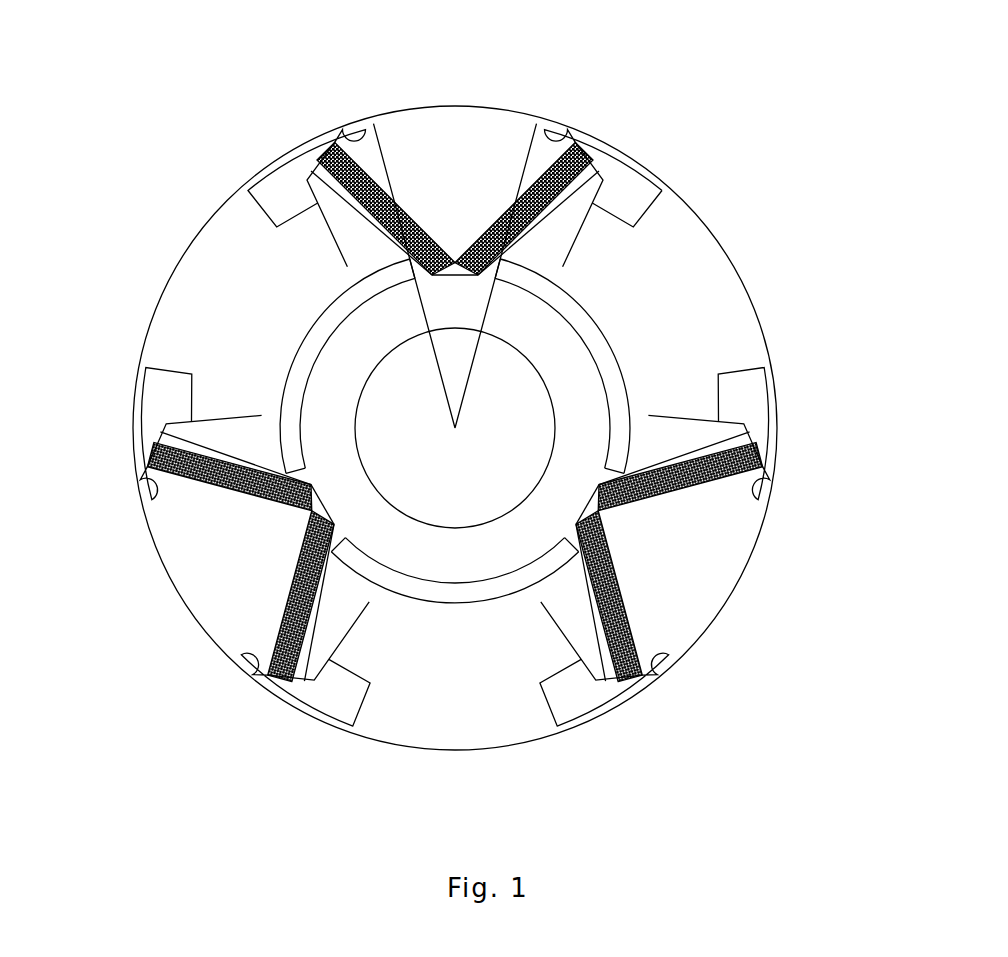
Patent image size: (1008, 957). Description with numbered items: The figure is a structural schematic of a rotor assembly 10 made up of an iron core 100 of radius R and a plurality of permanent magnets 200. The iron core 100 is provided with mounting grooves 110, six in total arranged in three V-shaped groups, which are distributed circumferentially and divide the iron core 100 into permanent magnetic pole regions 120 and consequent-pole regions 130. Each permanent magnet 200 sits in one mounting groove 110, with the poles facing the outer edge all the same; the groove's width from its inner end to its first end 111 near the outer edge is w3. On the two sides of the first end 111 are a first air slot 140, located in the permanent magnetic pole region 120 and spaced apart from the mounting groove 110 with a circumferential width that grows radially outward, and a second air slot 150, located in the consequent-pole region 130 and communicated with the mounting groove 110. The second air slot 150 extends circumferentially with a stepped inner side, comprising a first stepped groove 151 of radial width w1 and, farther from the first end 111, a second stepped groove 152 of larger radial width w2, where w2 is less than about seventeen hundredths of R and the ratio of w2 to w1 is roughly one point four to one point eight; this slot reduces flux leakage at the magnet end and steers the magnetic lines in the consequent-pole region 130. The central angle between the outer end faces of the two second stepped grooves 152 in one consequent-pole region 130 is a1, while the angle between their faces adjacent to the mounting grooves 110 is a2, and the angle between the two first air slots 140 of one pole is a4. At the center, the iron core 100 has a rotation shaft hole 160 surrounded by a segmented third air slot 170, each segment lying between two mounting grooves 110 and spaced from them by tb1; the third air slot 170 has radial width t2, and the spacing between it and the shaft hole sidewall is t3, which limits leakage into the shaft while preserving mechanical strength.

The rotor assembly 10 is at (494, 32).
The iron core 100 is at (178, 218).
The mounting groove 110 is at (642, 628).
The first end 111 is at (323, 143).
The permanent magnetic pole region 120 is at (730, 555).
The consequent-pole region 130 is at (680, 315).
The first air slot 140 is at (540, 159).
The second air slot 150 is at (673, 179).
The first stepped groove 151 is at (600, 157).
The second stepped groove 152 is at (642, 190).
The rotation shaft hole 160 is at (528, 442).
The third air slot 170 is at (630, 387).
The permanent magnet 200 is at (762, 497).
The distance between end face of third air slot and mounting groove sidewall tb1 is at (598, 653).
The radial width of first stepped groove w1 is at (166, 448).
The radial width of second stepped groove w2 is at (200, 377).
The width of mounting groove w3 is at (287, 668).
The central angle a1 is at (252, 225).
The central angle a2 is at (342, 260).
The central angle a4 is at (515, 188).
The radial width of third air slot t2 is at (420, 545).
The distance between rotation shaft hole sidewall and third air slot t3 is at (487, 522).
The radius of iron core R is at (455, 428).